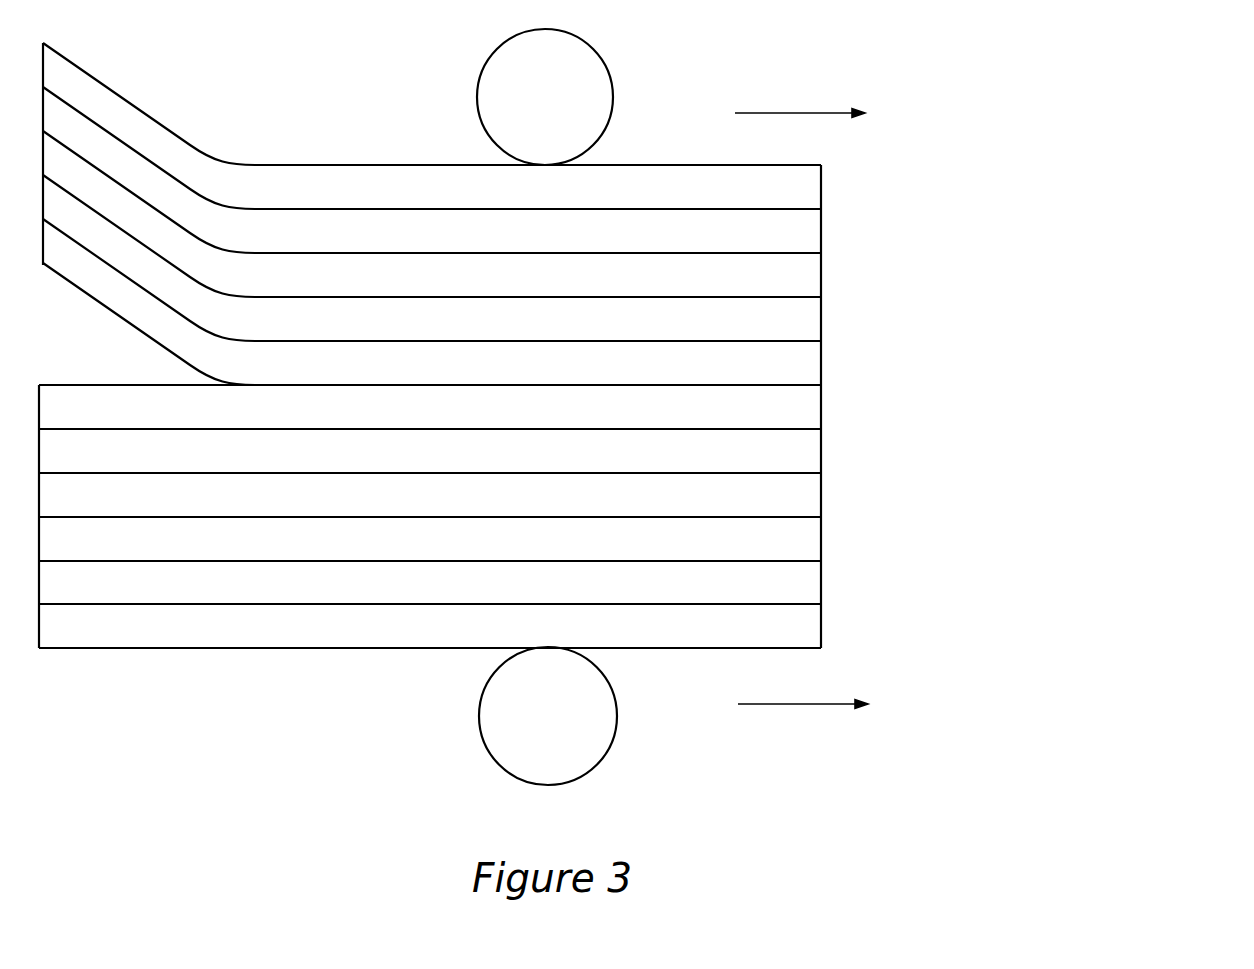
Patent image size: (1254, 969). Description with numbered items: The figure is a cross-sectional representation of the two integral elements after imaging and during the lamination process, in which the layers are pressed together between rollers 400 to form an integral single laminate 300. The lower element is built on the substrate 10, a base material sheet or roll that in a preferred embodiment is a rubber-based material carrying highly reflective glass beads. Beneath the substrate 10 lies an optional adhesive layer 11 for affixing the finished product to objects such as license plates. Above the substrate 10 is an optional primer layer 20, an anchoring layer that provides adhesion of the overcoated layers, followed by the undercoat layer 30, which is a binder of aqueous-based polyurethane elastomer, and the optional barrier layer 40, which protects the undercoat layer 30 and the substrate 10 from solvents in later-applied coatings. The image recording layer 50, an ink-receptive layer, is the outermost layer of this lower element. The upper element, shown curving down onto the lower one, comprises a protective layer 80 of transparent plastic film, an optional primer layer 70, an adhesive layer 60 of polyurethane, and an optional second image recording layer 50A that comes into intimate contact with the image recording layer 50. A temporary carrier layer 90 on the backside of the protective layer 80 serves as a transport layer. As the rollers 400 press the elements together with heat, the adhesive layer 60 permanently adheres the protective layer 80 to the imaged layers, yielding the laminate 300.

The substrate 10 is at (828, 576).
The adhesive layer 11 is at (828, 619).
The primer layer 20 is at (828, 532).
The undercoat layer 30 is at (828, 488).
The barrier layer 40 is at (828, 445).
The image recording layer 50 is at (828, 402).
The second image recording layer 50A is at (828, 358).
The adhesive layer 60 is at (828, 315).
The primer layer 70 is at (828, 272).
The protective layer 80 is at (828, 228).
The carrier layer 90 is at (828, 183).
The integral single laminate 300 is at (1104, 174).
The rollers 400 is at (558, 78).